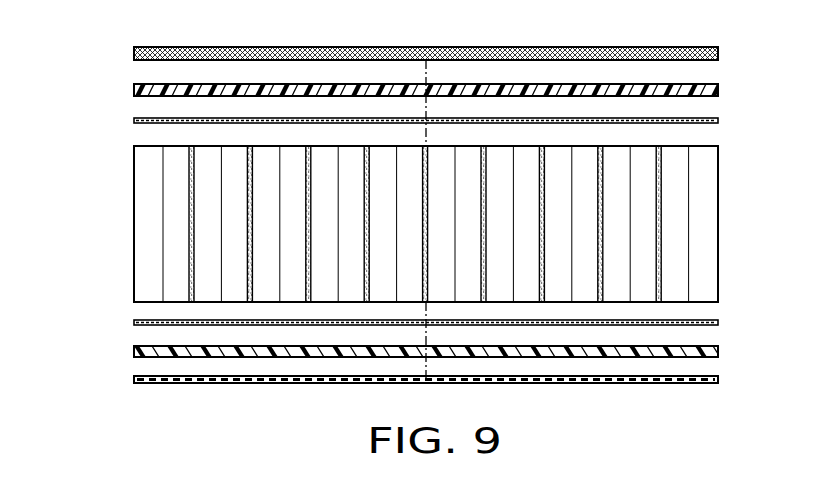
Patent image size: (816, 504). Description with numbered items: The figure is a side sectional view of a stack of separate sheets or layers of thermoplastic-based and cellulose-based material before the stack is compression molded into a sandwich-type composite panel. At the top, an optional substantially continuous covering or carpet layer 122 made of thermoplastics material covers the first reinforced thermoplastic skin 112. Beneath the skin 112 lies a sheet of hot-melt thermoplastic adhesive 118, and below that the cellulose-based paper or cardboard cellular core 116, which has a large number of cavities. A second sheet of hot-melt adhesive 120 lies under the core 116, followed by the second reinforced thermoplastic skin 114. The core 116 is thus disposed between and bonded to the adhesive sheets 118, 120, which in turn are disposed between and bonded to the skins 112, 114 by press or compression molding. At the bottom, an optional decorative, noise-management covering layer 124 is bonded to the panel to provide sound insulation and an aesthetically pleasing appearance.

The covering or carpet layer 122 is at (134, 53).
The first reinforced thermoplastic skin 112 is at (134, 90).
The sheet of hot-melt adhesive 118 is at (134, 120).
The cellular core 116 is at (134, 223).
The sheet of hot-melt adhesive 120 is at (134, 322).
The second reinforced thermoplastic skin 114 is at (134, 351).
The covering layer 124 is at (134, 380).